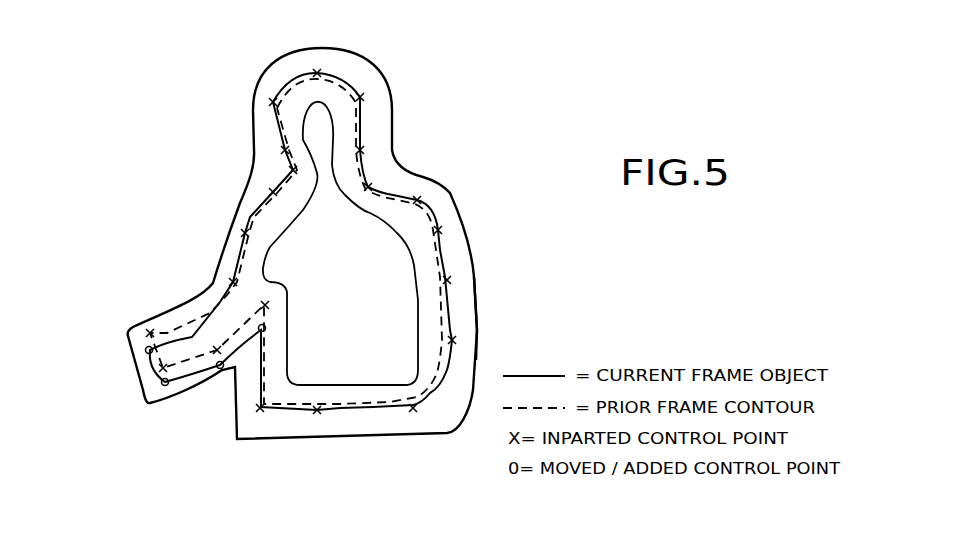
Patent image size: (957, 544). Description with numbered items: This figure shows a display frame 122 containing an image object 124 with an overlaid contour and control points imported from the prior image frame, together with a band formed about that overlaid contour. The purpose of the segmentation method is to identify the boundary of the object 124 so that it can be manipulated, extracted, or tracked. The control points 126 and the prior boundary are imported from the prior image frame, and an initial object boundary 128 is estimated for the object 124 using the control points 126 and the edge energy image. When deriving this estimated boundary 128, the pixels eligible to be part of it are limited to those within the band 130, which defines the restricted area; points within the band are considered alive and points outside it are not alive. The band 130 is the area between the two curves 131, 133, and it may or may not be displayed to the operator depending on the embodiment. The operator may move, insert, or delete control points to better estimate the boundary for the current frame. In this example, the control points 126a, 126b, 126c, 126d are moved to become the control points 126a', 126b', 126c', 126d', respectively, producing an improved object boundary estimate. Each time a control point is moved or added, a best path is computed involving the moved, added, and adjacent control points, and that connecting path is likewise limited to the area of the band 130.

The display frame 122 is at (470, 88).
The object 124 is at (432, 215).
The control points 126 is at (414, 412).
The control point 126a is at (124, 296).
The moved control point 126a' is at (91, 334).
The control point 126b is at (107, 379).
The moved control point 126b' is at (127, 421).
The control point 126c is at (199, 396).
The moved control point 126c' is at (241, 427).
The control point 126d is at (302, 282).
The moved control point 126d' is at (324, 318).
The initial object boundary 128 is at (208, 310).
The band 130 is at (418, 318).
The curve 131 is at (390, 225).
The curve 133 is at (473, 254).